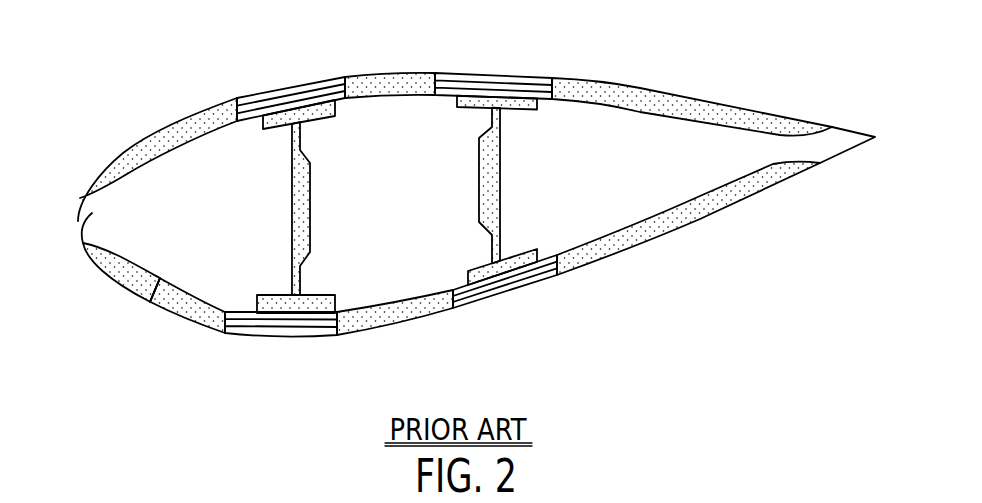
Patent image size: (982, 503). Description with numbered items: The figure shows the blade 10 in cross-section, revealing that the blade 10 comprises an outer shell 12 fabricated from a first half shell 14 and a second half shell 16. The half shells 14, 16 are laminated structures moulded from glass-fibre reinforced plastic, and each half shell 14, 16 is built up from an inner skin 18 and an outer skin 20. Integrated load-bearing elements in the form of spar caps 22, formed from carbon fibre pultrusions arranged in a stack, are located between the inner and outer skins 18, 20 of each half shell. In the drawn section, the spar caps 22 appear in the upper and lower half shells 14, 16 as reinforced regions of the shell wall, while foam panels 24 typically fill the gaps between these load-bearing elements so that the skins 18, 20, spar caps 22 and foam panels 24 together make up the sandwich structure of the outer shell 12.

The blade 10 is at (96, 90).
The outer shell 12 is at (655, 90).
The first half shell 14 is at (742, 110).
The second half shell 16 is at (637, 232).
The inner skin 18 is at (151, 304).
The outer skin 20 is at (200, 325).
The spar cap 22 is at (288, 92).
The foam panel 24 is at (395, 313).